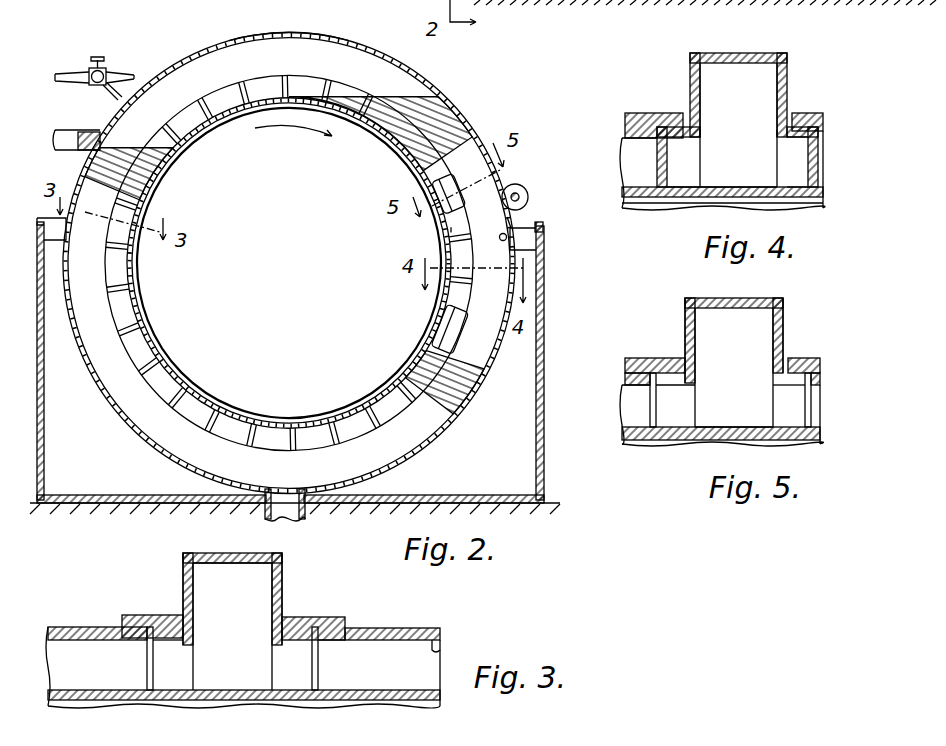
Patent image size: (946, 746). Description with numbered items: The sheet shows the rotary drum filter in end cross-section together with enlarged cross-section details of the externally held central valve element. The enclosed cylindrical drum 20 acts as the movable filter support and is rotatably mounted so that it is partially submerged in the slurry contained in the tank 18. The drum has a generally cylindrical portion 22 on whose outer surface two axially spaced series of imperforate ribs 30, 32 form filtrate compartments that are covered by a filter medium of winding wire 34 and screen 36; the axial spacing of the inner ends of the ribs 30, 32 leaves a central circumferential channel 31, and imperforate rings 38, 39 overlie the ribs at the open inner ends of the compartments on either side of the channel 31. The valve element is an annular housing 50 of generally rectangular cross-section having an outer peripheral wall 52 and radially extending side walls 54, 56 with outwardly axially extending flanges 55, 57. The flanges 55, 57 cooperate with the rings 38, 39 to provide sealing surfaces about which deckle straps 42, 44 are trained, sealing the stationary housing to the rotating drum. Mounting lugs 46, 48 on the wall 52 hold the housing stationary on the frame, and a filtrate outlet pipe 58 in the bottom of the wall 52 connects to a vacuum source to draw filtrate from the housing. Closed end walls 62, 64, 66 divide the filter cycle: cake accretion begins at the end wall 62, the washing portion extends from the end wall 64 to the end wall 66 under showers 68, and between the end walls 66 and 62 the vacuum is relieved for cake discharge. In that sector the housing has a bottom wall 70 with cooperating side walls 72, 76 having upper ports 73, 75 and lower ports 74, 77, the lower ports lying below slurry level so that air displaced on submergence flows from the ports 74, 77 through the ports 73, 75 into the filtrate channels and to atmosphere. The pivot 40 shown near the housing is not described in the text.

In FIG. 2, the tank 18 is at (512, 495).
In FIG. 2, the cylindrical drum 20 is at (167, 387).
In FIG. 2, the cylindrical portion 22 is at (207, 398).
In FIG. 3, the cylindrical portion 22 is at (220, 692).
In FIG. 4, the cylindrical portion 22 is at (700, 219).
In FIG. 5, the cylindrical portion 22 is at (685, 456).
In FIG. 3, the rib 30 is at (78, 653).
In FIG. 3, the channel 31 is at (243, 610).
In FIG. 2, the rib 32 is at (278, 80).
In FIG. 3, the rib 32 is at (423, 673).
In FIG. 3, the winding wire 34 is at (442, 648).
In FIG. 3, the screen 36 is at (418, 627).
In FIG. 3, the imperforate ring 38 is at (137, 627).
In FIG. 4, the imperforate ring 38 is at (623, 135).
In FIG. 5, the imperforate ring 38 is at (623, 378).
In FIG. 3, the imperforate ring 39 is at (345, 627).
In FIG. 5, the imperforate ring 39 is at (820, 362).
In FIG. 2, the pivot 40 is at (516, 226).
In FIG. 3, the deckle strap 42 is at (158, 620).
In FIG. 4, the deckle strap 42 is at (667, 113).
In FIG. 5, the deckle strap 42 is at (662, 358).
In FIG. 3, the deckle strap 44 is at (332, 617).
In FIG. 4, the deckle strap 44 is at (803, 117).
In FIG. 5, the deckle strap 44 is at (795, 355).
In FIG. 2, the mounting lug 46 is at (66, 238).
In FIG. 2, the mounting lug 48 is at (532, 248).
In FIG. 2, the housing 50 is at (428, 71).
In FIG. 2, the outer peripheral wall 52 is at (220, 46).
In FIG. 3, the outer peripheral wall 52 is at (241, 553).
In FIG. 4, the outer peripheral wall 52 is at (744, 53).
In FIG. 5, the outer peripheral wall 52 is at (757, 298).
In FIG. 3, the side wall 54 is at (187, 570).
In FIG. 4, the side wall 54 is at (690, 70).
In FIG. 5, the side wall 54 is at (688, 317).
In FIG. 2, the flange 55 is at (78, 130).
In FIG. 3, the flange 55 is at (168, 658).
In FIG. 4, the flange 55 is at (700, 135).
In FIG. 2, the side wall 56 is at (333, 57).
In FIG. 3, the side wall 56 is at (284, 578).
In FIG. 4, the side wall 56 is at (787, 63).
In FIG. 5, the side wall 56 is at (788, 317).
In FIG. 3, the flange 57 is at (298, 658).
In FIG. 4, the flange 57 is at (777, 135).
In FIG. 2, the filtrate outlet pipe 58 is at (300, 484).
In FIG. 2, the closed end wall 62 is at (433, 362).
In FIG. 2, the closed end wall 64 is at (142, 181).
In FIG. 2, the closed end wall 66 is at (413, 137).
In FIG. 2, the showers 68 is at (108, 70).
In FIG. 4, the bottom wall 70 is at (707, 187).
In FIG. 5, the bottom wall 70 is at (727, 427).
In FIG. 4, the side wall 72 is at (668, 177).
In FIG. 5, the upper port 73 is at (662, 398).
In FIG. 4, the lower port 74 is at (657, 157).
In FIG. 2, the upper port 75 is at (457, 201).
In FIG. 5, the upper port 75 is at (798, 400).
In FIG. 2, the side wall 76 is at (434, 229).
In FIG. 4, the side wall 76 is at (812, 173).
In FIG. 2, the lower port 77 is at (457, 317).
In FIG. 4, the lower port 77 is at (810, 163).